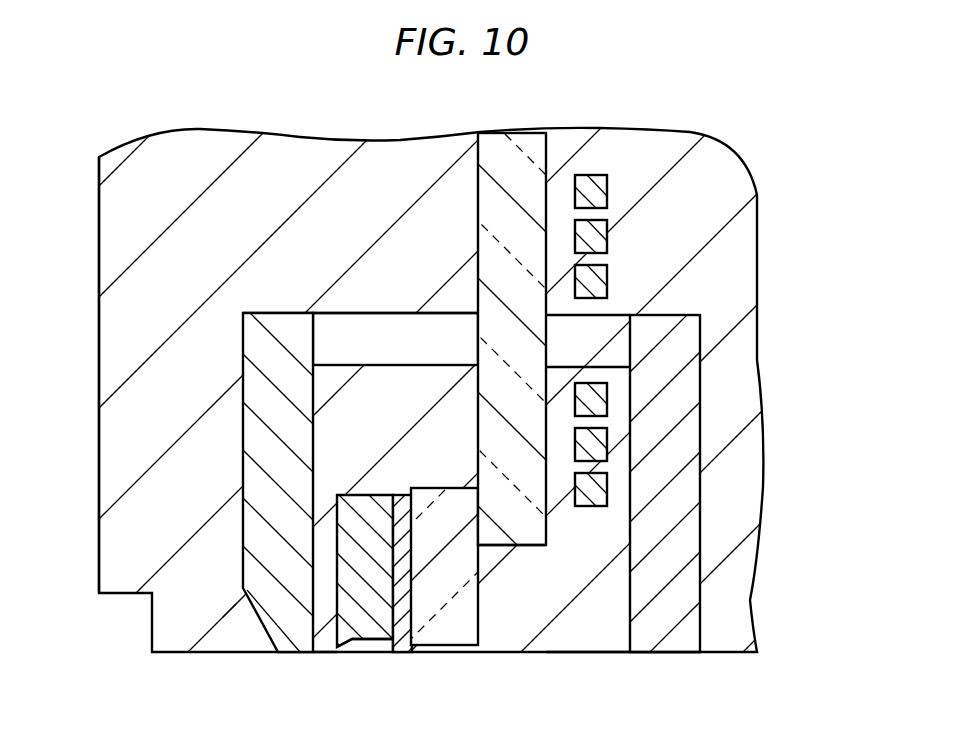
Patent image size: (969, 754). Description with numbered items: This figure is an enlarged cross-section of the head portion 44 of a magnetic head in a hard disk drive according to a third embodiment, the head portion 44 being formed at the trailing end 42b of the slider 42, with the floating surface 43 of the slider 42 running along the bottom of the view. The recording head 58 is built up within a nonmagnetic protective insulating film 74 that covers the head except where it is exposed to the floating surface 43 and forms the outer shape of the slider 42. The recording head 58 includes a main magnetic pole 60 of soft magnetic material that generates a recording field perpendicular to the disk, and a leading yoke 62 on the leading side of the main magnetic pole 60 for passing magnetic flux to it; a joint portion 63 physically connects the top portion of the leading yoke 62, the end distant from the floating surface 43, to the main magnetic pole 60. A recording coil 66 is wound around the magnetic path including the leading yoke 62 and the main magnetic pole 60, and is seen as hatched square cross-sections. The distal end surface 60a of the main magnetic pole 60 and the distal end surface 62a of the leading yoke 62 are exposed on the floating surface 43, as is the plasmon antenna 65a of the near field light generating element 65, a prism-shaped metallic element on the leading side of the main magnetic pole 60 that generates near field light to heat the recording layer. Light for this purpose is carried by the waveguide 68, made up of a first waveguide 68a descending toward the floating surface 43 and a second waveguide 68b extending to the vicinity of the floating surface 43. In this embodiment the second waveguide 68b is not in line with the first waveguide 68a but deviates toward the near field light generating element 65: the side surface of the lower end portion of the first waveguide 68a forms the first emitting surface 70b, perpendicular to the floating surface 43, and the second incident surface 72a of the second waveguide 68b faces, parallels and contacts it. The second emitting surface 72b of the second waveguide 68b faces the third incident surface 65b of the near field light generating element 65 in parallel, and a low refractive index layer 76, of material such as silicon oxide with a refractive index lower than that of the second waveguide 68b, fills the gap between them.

The slider 42 is at (484, 380).
The trailing end 42b is at (100, 386).
The floating surface 43 is at (596, 656).
The head portion 44 is at (233, 634).
The recording head 58 is at (353, 292).
The main magnetic pole 60 is at (258, 478).
The distal end surface of the main magnetic pole 60a is at (290, 654).
The leading yoke 62 is at (685, 595).
The distal end surface of the leading yoke 62a is at (663, 656).
The joint portion 63 is at (390, 330).
The near field light generating element 65 is at (347, 608).
The plasmon antenna 65a is at (328, 654).
The third incident surface 65b is at (413, 647).
The recording coil 66 is at (608, 192).
The waveguide 68 is at (466, 178).
The first waveguide 68a is at (500, 150).
The second waveguide 68b is at (457, 632).
The first emitting surface 70b is at (466, 548).
The second incident surface 72a is at (493, 470).
The second emitting surface 72b is at (376, 628).
The protective insulating film 74 is at (167, 140).
The low refractive index layer 76 is at (401, 654).